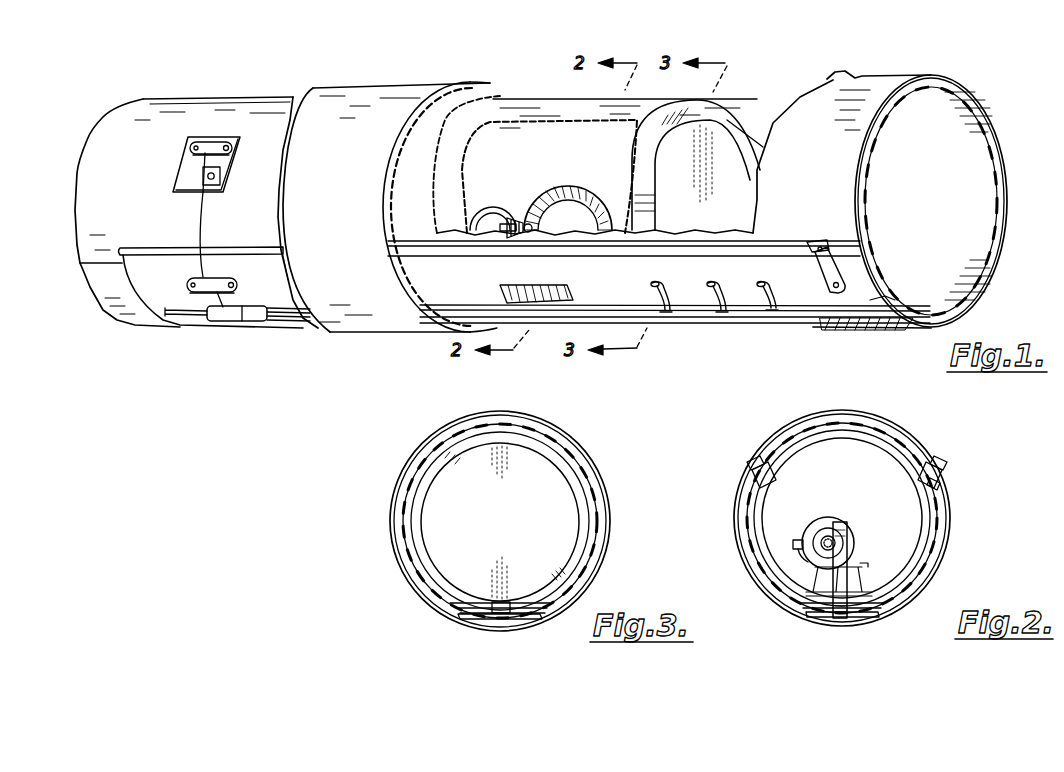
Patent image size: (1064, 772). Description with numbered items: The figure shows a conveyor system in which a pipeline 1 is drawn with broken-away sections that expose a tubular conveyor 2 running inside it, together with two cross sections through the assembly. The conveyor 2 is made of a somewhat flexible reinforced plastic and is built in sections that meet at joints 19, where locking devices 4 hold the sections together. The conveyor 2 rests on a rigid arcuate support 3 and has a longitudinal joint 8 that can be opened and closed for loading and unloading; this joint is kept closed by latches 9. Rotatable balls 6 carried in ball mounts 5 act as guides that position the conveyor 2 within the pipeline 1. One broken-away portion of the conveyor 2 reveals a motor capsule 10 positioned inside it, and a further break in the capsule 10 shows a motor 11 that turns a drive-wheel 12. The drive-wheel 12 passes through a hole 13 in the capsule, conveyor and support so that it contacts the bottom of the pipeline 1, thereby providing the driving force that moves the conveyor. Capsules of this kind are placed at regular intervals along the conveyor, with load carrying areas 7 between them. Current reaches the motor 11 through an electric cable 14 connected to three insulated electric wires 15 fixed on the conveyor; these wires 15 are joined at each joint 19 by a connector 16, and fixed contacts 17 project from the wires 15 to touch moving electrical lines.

In FIG. 1, the pipeline 1 is at (380, 83).
In FIG. 3, the pipeline 1 is at (423, 445).
In FIG. 2, the pipeline 1 is at (907, 427).
In FIG. 1, the tubular conveyor 2 is at (288, 97).
In FIG. 3, the tubular conveyor 2 is at (588, 553).
In FIG. 2, the tubular conveyor 2 is at (820, 425).
In FIG. 1, the rigid arcuate support 3 is at (147, 288).
In FIG. 3, the rigid arcuate support 3 is at (468, 620).
In FIG. 2, the rigid arcuate support 3 is at (823, 620).
In FIG. 1, the locking devices 4 is at (203, 142).
In FIG. 2, the locking devices 4 is at (753, 465).
In FIG. 1, the ball mounts 5 is at (222, 172).
In FIG. 2, the ball mounts 5 is at (748, 487).
In FIG. 1, the rotatable balls 6 is at (220, 177).
In FIG. 2, the rotatable balls 6 is at (943, 479).
In FIG. 1, the load carrying areas 7 is at (968, 170).
In FIG. 1, the longitudinal joint 8 is at (110, 263).
In FIG. 1, the latches 9 is at (818, 262).
In FIG. 1, the motor capsule 10 is at (733, 117).
In FIG. 3, the motor capsule 10 is at (432, 510).
In FIG. 2, the motor capsule 10 is at (919, 514).
In FIG. 1, the motor 11 is at (480, 200).
In FIG. 2, the motor 11 is at (830, 517).
In FIG. 1, the drive-wheel 12 is at (567, 187).
In FIG. 3, the drive-wheel 12 is at (503, 623).
In FIG. 2, the drive-wheel 12 is at (847, 543).
In FIG. 1, the hole 13 is at (500, 290).
In FIG. 2, the electric cable 14 is at (805, 558).
In FIG. 1, the insulated electric wires 15 is at (887, 293).
In FIG. 3, the insulated electric wires 15 is at (527, 628).
In FIG. 2, the insulated electric wires 15 is at (860, 618).
In FIG. 1, the connector 16 is at (238, 322).
In FIG. 1, the fixed contacts 17 is at (760, 284).
In FIG. 1, the joints 19 is at (221, 137).